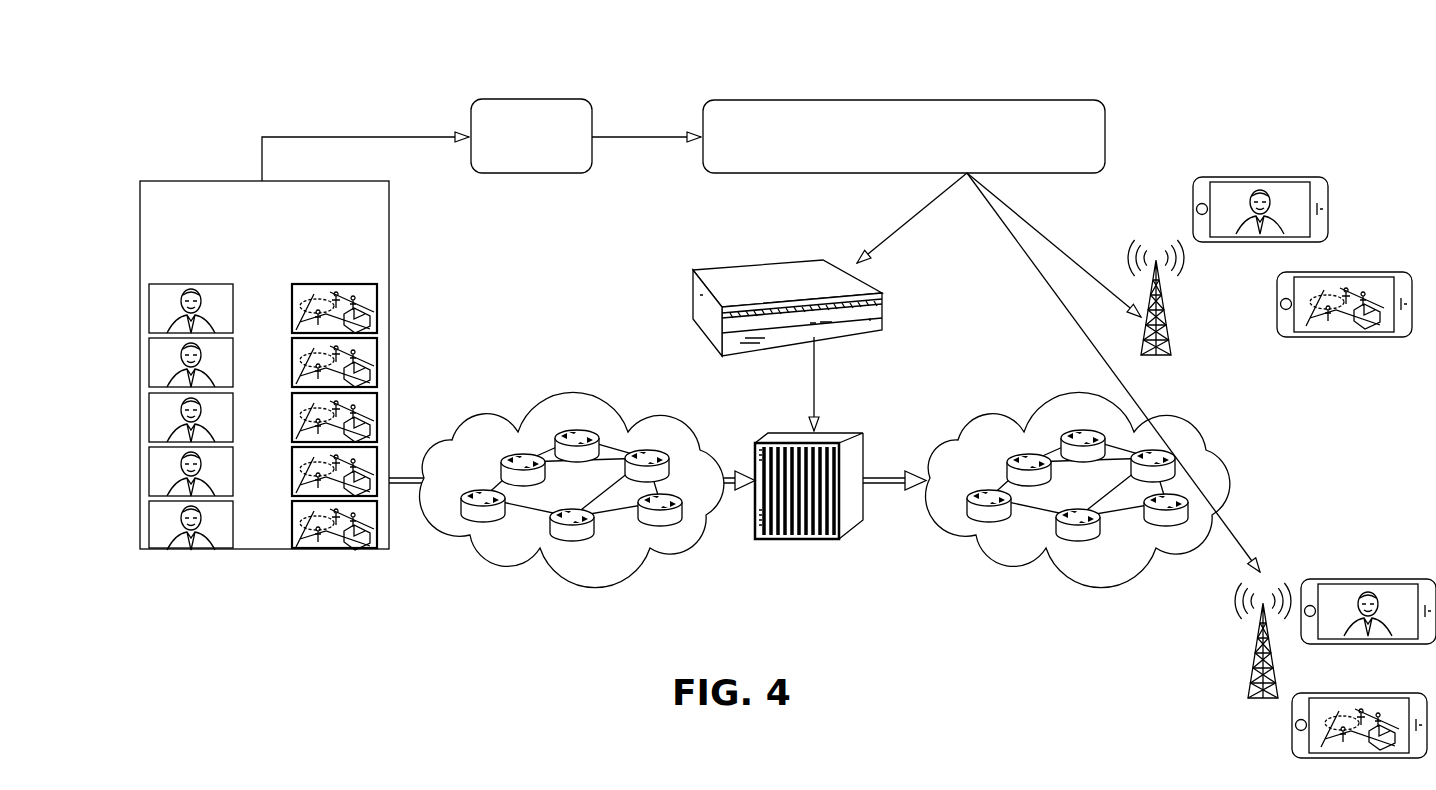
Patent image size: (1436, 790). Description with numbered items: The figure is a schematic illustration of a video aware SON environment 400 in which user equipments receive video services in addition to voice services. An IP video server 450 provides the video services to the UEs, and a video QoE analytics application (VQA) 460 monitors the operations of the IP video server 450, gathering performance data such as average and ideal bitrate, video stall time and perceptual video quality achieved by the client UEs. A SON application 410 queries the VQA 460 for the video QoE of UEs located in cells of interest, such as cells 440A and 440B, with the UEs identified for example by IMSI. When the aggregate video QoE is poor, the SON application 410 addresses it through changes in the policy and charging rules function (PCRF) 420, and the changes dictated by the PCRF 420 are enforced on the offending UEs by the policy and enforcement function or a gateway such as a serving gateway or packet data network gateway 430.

The video aware SON environment 400 is at (1222, 58).
The SON application 410 is at (1045, 100).
The policy and charging rules function (PCRF) 420 is at (693, 270).
The Policy and Enforcement Function (PCEF) / serving gateway (SGW) / packet data net 430 is at (863, 433).
The cell 440A is at (1125, 255).
The cell 440B is at (1278, 572).
The IP video server 450 is at (183, 181).
The video QoE analytics application (VQA) 460 is at (530, 100).